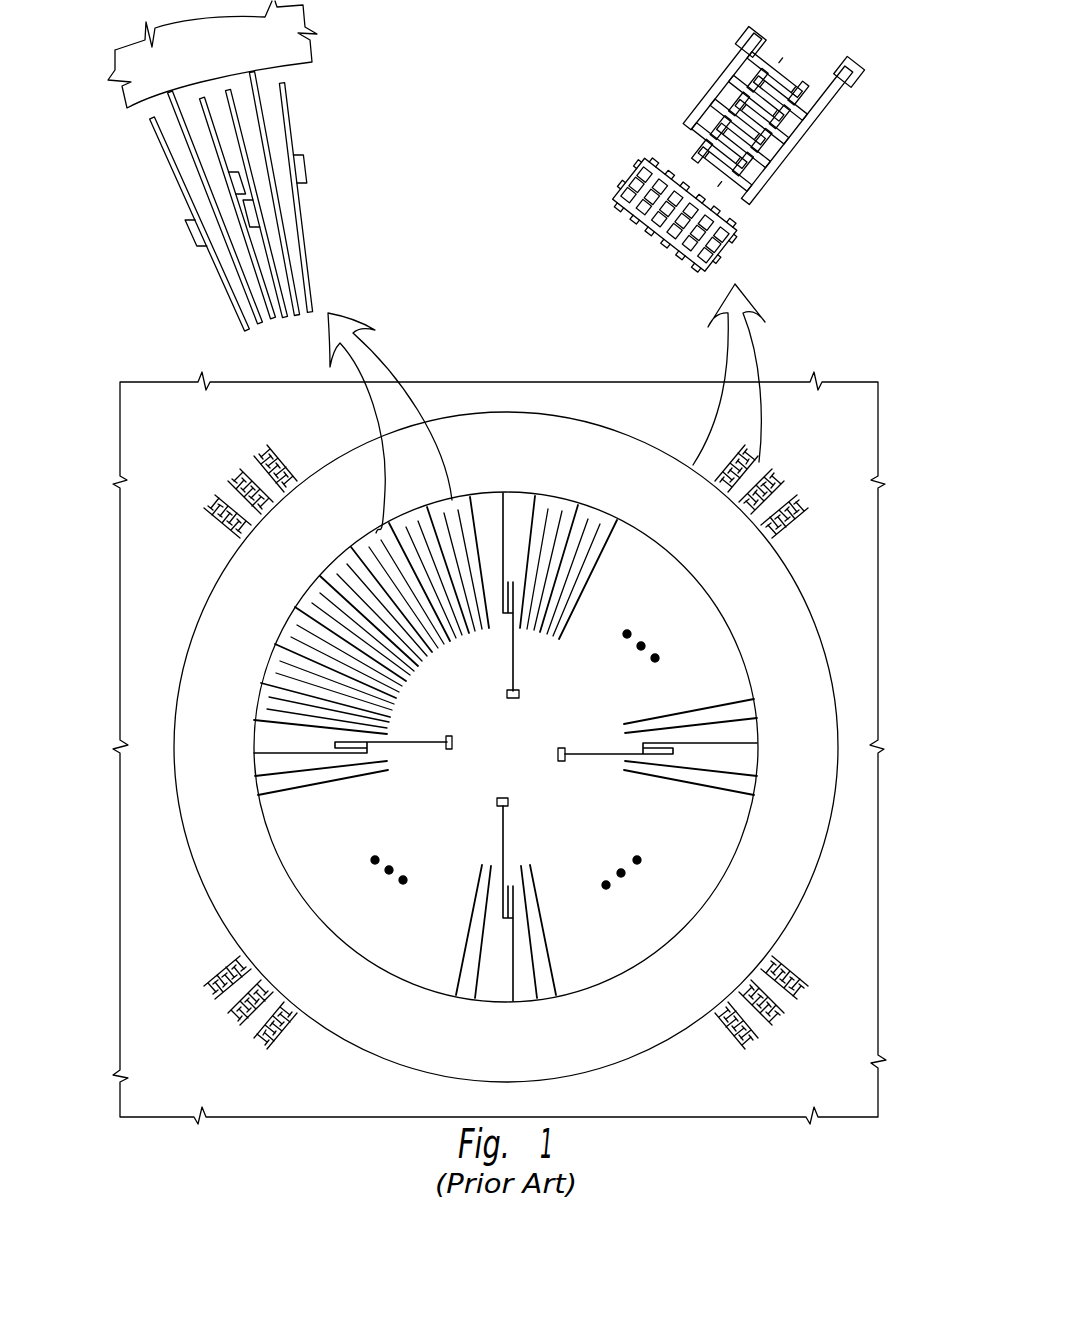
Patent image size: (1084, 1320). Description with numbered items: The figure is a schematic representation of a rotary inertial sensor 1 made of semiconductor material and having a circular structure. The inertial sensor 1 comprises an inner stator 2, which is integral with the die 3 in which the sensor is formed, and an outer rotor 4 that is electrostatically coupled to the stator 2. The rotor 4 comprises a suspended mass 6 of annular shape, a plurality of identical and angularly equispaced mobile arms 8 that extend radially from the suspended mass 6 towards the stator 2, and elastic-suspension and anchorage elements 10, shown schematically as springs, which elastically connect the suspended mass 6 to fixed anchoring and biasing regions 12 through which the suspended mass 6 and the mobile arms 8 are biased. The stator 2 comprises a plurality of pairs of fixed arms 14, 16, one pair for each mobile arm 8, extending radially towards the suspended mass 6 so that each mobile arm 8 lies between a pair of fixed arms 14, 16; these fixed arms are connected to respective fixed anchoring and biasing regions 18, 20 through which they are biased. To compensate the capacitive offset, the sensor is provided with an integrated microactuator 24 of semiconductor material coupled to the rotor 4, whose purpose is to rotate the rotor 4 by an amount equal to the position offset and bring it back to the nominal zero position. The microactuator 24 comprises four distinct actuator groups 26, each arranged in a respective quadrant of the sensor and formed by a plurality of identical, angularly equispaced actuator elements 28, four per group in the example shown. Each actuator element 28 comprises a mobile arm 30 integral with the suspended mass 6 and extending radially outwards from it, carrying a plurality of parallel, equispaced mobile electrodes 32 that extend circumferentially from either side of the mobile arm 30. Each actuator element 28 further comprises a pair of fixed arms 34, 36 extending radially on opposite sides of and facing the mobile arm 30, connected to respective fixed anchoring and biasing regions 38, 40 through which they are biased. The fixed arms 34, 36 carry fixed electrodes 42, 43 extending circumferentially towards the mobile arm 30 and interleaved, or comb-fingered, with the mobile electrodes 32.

The inertial sensor 1 is at (533, 296).
The stator 2 is at (544, 652).
The die 3 is at (579, 398).
The rotor 4 is at (527, 413).
The suspended mass 6 is at (598, 432).
The mobile arms 8 is at (258, 72).
The elastic-suspension and anchorage elements 10 is at (513, 668).
The fixed anchoring and biasing regions 12 is at (507, 694).
The fixed arm 14 is at (310, 258).
The fixed arm 16 is at (240, 316).
The fixed anchoring and biasing region 18 is at (300, 170).
The fixed anchoring and biasing region 20 is at (253, 212).
The integrated microactuator 24 is at (205, 545).
The actuator groups 26 is at (495, 588).
The actuator elements 28 is at (258, 452).
The mobile arm 30 is at (770, 103).
The mobile electrodes 32 is at (700, 165).
The fixed arm 34 is at (793, 150).
The fixed arm 36 is at (718, 103).
The fixed anchoring and biasing region 38 is at (852, 75).
The fixed anchoring and biasing region 40 is at (748, 40).
The fixed electrodes 42 is at (765, 180).
The fixed electrodes 43 is at (738, 100).